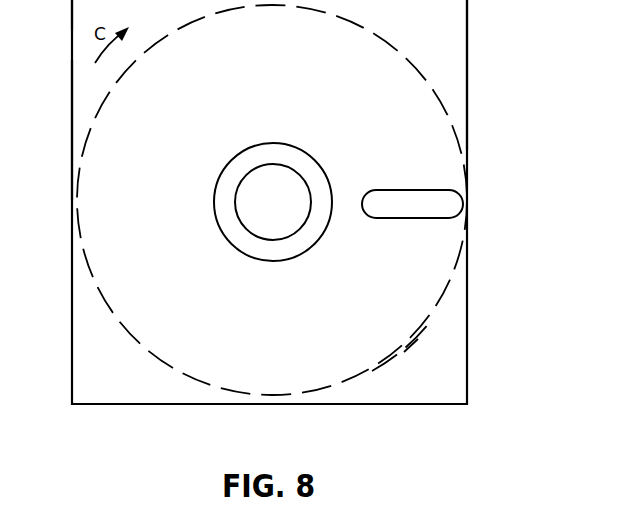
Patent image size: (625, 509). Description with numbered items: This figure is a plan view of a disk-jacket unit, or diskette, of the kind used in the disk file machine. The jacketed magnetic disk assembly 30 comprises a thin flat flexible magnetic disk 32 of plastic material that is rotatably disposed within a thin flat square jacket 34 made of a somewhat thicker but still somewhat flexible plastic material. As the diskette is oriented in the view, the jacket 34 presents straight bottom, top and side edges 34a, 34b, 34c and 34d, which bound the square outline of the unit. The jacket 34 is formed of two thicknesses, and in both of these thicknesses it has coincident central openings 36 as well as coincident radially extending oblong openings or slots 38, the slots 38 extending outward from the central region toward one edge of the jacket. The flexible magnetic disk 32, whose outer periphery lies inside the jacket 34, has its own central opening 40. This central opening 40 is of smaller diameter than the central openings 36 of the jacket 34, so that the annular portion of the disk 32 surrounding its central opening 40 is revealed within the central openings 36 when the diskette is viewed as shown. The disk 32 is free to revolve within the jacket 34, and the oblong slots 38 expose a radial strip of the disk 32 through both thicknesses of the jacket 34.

The jacketed magnetic disk unit 30 is at (137, 406).
The flexible magnetic disk 32 is at (412, 352).
The jacket 34 is at (73, 372).
The bottom edge 34a is at (470, 17).
The top edge 34b is at (364, 405).
The side edge 34c is at (72, 111).
The side edge 34d is at (69, 0).
The central openings 36 is at (245, 152).
The radially extending oblong openings or slots 38 is at (410, 191).
The central opening of the disk 40 is at (288, 170).